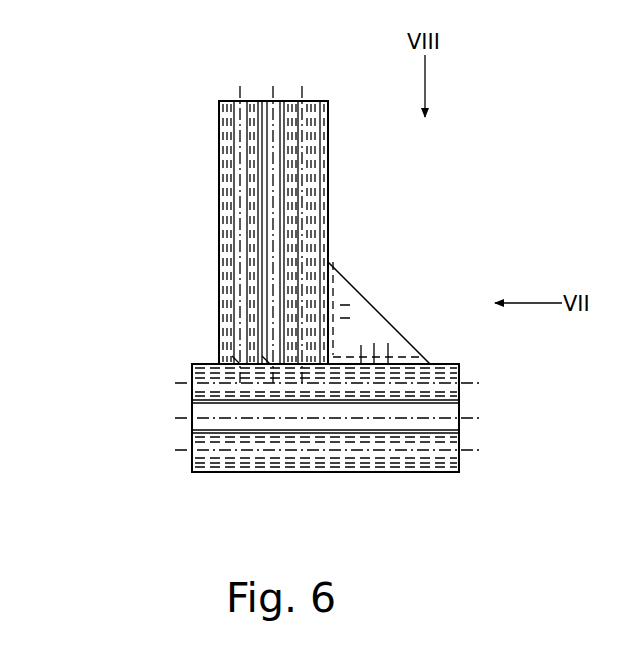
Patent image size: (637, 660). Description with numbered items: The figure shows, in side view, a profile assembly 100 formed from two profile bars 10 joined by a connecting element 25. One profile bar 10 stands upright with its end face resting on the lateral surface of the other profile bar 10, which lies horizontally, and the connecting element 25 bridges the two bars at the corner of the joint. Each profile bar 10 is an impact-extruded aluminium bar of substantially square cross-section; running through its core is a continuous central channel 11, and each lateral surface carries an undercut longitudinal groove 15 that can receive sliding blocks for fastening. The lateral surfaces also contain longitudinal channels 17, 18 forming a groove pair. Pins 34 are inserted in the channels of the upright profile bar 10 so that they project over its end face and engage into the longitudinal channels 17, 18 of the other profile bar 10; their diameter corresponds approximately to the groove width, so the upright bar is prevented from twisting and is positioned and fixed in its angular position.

The profile assembly 100 is at (128, 247).
The profile bar 10 is at (202, 142).
The longitudinal channel 17 is at (240, 100).
The central channel 11 is at (278, 104).
The longitudinal channel 18 is at (305, 102).
The undercut longitudinal groove 15 is at (460, 417).
The connecting element 25 is at (383, 315).
The pin 34 is at (268, 360).